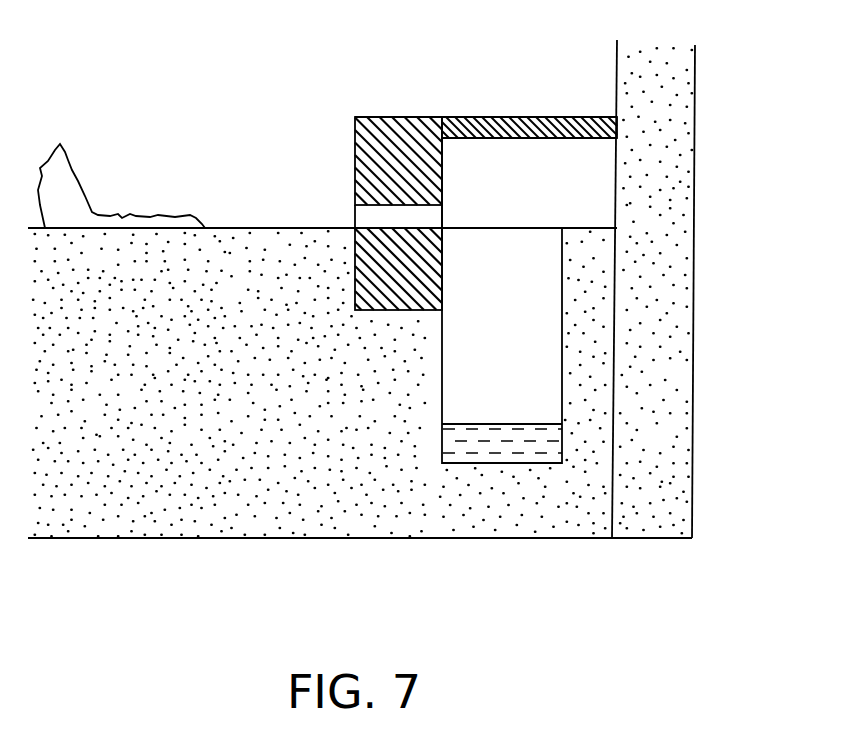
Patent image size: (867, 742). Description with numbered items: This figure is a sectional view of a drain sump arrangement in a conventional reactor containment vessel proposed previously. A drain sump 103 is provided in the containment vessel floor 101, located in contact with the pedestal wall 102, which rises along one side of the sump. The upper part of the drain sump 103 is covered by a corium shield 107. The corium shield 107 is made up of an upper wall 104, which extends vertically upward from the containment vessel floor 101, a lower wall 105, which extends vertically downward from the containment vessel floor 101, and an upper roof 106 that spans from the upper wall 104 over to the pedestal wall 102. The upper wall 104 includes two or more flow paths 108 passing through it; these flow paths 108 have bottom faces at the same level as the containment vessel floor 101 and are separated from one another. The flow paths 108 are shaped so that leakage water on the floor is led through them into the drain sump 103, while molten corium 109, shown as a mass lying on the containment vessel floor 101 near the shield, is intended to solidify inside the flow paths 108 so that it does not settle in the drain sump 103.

The containment vessel floor 101 is at (366, 538).
The pedestal wall 102 is at (695, 183).
The drain sump 103 is at (562, 346).
The upper wall 104 is at (355, 134).
The lower wall 105 is at (354, 228).
The upper roof 106 is at (583, 126).
The corium shield 107 is at (455, 98).
The flow paths 108 is at (432, 213).
The molten corium 109 is at (70, 168).